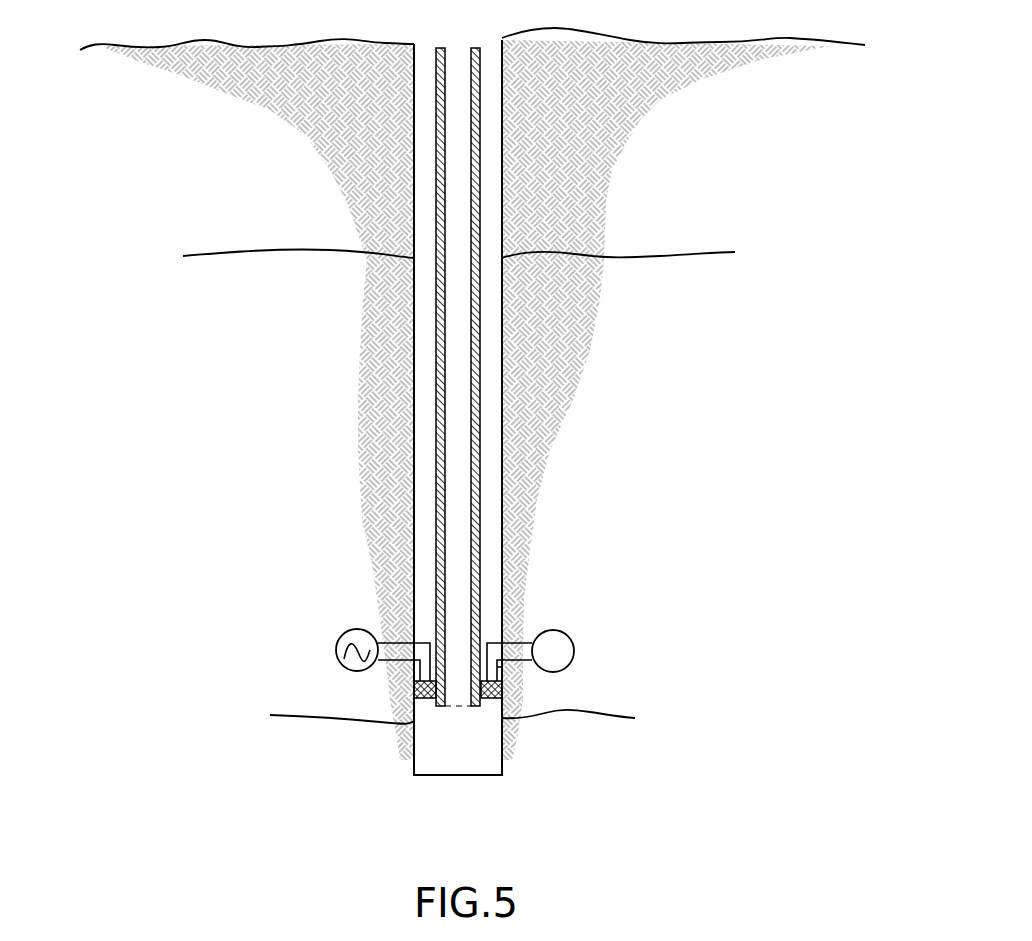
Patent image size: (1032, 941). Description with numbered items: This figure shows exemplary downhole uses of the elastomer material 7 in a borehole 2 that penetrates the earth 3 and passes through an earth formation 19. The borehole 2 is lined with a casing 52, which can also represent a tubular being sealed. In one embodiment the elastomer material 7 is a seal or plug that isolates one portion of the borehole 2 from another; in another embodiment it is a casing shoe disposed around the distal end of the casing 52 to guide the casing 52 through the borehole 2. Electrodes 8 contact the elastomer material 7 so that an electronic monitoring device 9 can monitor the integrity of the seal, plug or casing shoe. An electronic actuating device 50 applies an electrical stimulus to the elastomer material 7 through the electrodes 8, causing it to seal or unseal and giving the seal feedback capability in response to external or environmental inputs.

The borehole 2 is at (414, 187).
The earth 3 is at (182, 161).
The earth formation 19 is at (270, 473).
The casing 52 is at (440, 347).
The electronic actuating device 50 is at (341, 637).
The electronic monitoring device 9 is at (566, 636).
The elastomer material 7 is at (414, 688).
The electrodes 8 is at (498, 667).